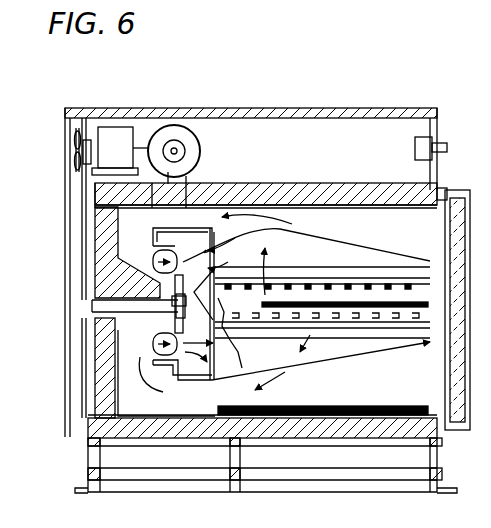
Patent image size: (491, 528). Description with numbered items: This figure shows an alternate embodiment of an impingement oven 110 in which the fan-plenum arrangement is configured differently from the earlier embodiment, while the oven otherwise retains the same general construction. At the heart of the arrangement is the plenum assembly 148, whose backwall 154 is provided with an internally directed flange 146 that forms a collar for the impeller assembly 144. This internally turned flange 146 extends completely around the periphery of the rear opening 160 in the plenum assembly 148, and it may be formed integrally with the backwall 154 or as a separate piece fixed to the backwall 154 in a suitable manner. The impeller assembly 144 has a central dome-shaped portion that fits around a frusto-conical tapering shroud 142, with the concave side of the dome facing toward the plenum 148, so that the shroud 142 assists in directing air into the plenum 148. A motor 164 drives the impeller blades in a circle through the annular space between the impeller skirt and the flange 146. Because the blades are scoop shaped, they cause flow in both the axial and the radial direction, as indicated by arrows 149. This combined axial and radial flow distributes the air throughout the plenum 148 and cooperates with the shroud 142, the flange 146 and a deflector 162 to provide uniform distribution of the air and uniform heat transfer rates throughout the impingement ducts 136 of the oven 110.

The impingement oven 110 is at (340, 80).
The impingement ducts 136 is at (343, 343).
The tapering shroud 142 is at (150, 254).
The impeller assembly 144 is at (150, 345).
The internally directed flange 146 is at (206, 222).
The plenum assembly 148 is at (190, 230).
The arrows 149 is at (262, 234).
The backwall 154 is at (153, 243).
The rear opening 160 is at (150, 362).
The deflector 162 is at (240, 323).
The motor 164 is at (115, 133).